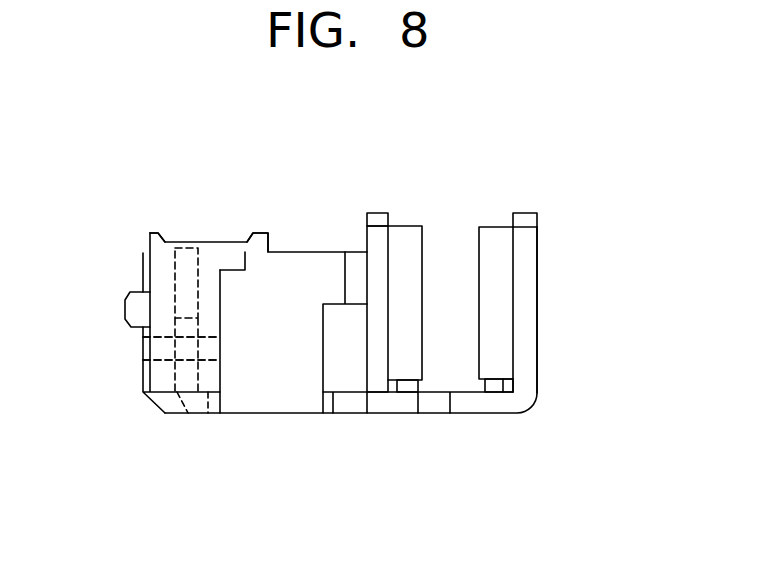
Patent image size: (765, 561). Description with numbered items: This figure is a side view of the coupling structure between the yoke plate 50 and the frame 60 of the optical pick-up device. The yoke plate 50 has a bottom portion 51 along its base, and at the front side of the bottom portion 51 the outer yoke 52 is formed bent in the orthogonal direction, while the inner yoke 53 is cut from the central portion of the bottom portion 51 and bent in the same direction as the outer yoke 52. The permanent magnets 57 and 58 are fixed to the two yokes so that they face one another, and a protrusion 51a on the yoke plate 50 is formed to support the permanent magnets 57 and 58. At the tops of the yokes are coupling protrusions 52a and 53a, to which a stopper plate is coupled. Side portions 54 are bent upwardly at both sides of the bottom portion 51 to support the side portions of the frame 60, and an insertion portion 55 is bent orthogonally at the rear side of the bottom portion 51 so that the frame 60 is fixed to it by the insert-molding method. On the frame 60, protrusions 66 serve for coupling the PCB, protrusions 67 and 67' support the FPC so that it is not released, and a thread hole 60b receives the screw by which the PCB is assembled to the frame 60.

The yoke plate 50 is at (548, 420).
The bottom portion 51 is at (461, 414).
The protrusion 51a is at (497, 393).
The outer yoke 52 is at (538, 303).
The coupling protrusion 52a is at (525, 222).
The inner yoke 53 is at (367, 240).
The coupling protrusion 53a is at (374, 213).
The side portion 54 is at (273, 414).
The insertion portion 55 is at (186, 247).
The permanent magnet 57 is at (491, 227).
The permanent magnet 58 is at (410, 226).
The frame 60 is at (222, 238).
The thread hole 60b is at (153, 352).
The protrusion 66 is at (128, 304).
The protrusion 67 is at (149, 209).
The protrusion 67' is at (263, 214).